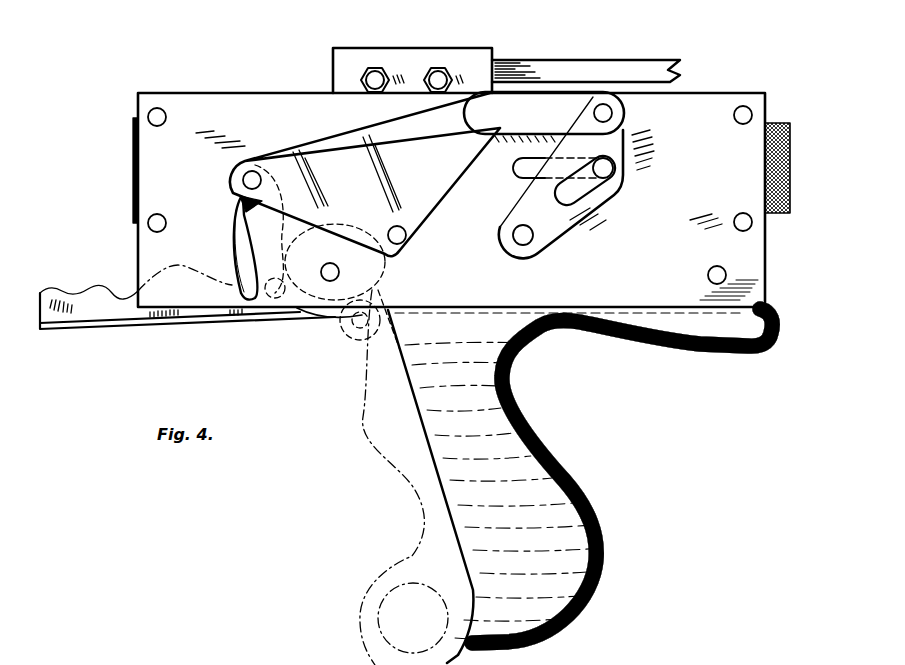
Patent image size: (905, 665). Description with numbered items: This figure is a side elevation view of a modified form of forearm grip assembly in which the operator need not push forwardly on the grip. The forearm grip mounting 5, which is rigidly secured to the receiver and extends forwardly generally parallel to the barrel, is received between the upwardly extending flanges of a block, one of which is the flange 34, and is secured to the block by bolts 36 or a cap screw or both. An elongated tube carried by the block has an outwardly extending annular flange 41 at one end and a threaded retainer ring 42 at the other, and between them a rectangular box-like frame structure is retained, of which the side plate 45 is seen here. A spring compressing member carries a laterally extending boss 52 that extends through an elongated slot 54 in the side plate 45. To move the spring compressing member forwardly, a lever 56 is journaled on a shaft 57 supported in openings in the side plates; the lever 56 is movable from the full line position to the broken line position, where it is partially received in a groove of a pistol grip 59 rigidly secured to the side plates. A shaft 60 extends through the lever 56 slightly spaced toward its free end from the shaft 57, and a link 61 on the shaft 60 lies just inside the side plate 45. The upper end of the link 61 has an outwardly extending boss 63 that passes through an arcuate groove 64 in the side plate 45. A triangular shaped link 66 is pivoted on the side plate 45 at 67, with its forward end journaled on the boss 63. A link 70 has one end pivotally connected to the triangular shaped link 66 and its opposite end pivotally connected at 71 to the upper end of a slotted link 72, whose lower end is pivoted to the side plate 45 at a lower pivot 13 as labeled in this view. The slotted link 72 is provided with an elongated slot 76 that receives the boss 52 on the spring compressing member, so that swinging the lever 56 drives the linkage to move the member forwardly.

The forearm grip mounting 5 is at (607, 70).
The pin 13 is at (522, 245).
The flange 34 is at (455, 58).
The bolts 36 is at (428, 72).
The annular flange 41 is at (133, 190).
The retainer ring 42 is at (782, 215).
The side plate 45 is at (675, 295).
The boss 52 is at (606, 171).
The elongated slot 54 is at (517, 175).
The lever 56 is at (112, 317).
The shaft 57 is at (330, 282).
The pistol grip 59 is at (578, 483).
The shaft 60 is at (268, 300).
The link 61 is at (240, 213).
The boss 63 is at (250, 170).
The arcuate groove 64 is at (237, 250).
The triangular shaped link 66 is at (428, 218).
The pivot 67 is at (407, 247).
The link 70 is at (535, 105).
The pivotal connection 71 is at (612, 113).
The slotted link 72 is at (562, 228).
The elongated slot 76 is at (583, 196).